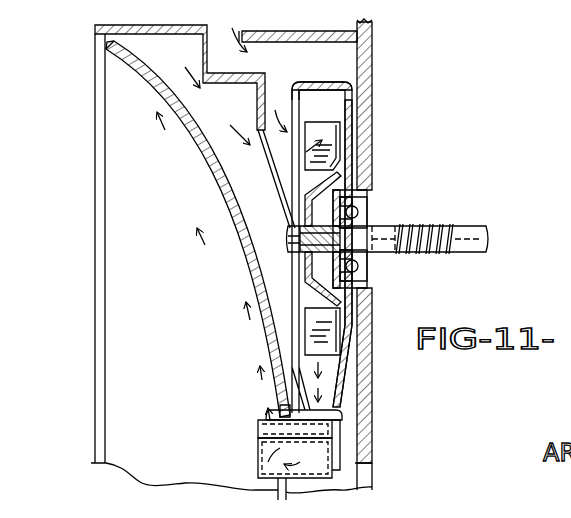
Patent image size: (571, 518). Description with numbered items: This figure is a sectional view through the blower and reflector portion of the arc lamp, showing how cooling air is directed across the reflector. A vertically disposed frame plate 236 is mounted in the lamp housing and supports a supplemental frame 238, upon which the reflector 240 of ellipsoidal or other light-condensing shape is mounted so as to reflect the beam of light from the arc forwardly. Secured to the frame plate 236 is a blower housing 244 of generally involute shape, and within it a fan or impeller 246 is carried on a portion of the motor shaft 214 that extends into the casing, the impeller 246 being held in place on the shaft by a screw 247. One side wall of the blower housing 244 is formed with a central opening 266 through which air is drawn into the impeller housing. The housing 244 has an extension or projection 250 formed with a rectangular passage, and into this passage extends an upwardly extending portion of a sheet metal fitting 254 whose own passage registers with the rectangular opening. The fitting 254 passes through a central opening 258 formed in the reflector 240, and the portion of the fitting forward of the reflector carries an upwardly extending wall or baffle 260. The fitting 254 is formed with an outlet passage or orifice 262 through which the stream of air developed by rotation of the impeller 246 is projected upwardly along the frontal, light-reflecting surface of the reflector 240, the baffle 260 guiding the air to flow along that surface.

The motor shaft 214 is at (465, 226).
The frame plate 236 is at (360, 86).
The supplemental frame 238 is at (128, 27).
The reflector 240 is at (147, 79).
The blower housing 244 is at (336, 83).
The fan or impeller 246 is at (333, 133).
The screw 247 is at (297, 223).
The extension or projection 250 is at (340, 423).
The sheet metal fitting 254 is at (258, 456).
The central opening 258 is at (280, 412).
The wall or baffle 260 is at (258, 421).
The outlet passage or orifice 262 is at (268, 414).
The central opening 266 is at (292, 165).